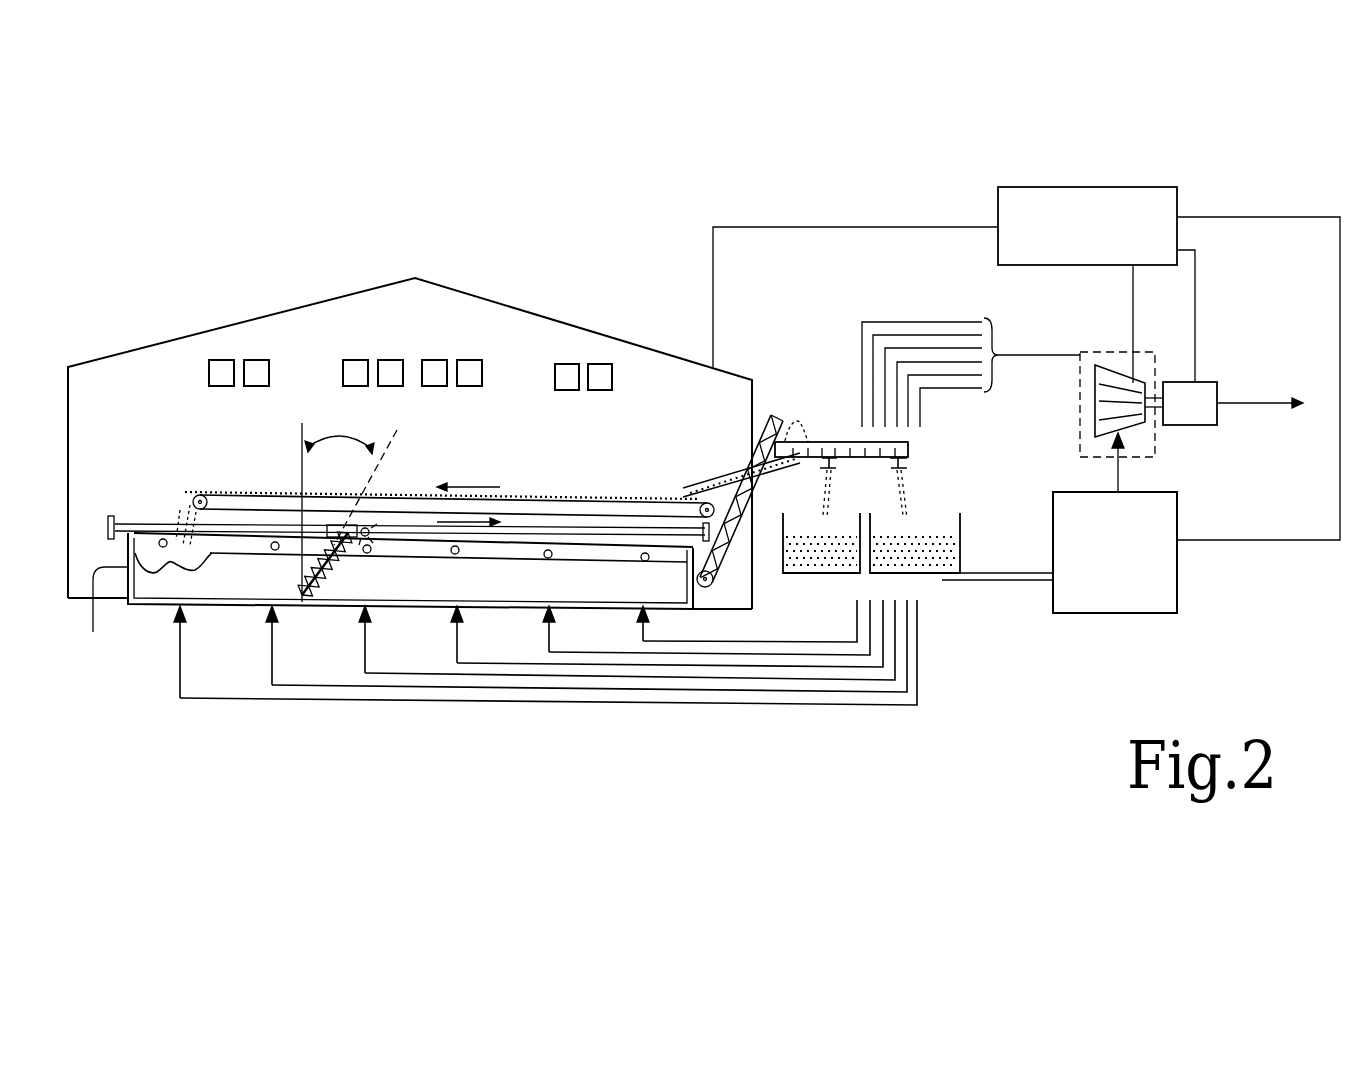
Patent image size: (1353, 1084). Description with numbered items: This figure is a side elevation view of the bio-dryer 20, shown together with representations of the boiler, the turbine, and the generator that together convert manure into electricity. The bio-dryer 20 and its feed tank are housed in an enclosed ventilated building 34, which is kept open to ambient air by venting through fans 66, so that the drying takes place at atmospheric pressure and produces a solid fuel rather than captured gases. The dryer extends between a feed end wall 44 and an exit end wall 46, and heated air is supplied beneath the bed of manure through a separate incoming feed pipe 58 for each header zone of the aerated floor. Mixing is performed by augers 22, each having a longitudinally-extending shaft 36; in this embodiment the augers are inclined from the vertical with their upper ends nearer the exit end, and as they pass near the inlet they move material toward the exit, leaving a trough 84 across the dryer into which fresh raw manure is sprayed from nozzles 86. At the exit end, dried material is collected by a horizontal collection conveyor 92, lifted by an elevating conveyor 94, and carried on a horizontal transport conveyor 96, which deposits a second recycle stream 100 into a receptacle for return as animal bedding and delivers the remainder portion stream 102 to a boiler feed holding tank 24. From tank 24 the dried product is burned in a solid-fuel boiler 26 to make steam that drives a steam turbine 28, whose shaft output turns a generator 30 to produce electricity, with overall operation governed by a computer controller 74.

The bio-dryer 20 is at (229, 483).
The augers 22 is at (336, 600).
The boiler feed holding tank 24 is at (917, 578).
The solid-fuel boiler 26 is at (1177, 575).
The steam turbine 28 is at (1135, 425).
The generator 30 is at (1205, 382).
The enclosed ventilated building 34 is at (298, 303).
The longitudinally-extending shaft 36 is at (320, 595).
The feed end wall 44 is at (690, 594).
The exit end wall 46 is at (98, 617).
The incoming feed pipe 58 is at (665, 642).
The fans 66 is at (600, 364).
The computer controller 74 is at (998, 200).
The trough 84 is at (157, 572).
The nozzles 86 is at (370, 537).
The horizontal collection conveyor 92 is at (712, 590).
The elevating conveyor 94 is at (740, 565).
The horizontal transport conveyor 96 is at (813, 460).
The second recycle stream 100 is at (830, 512).
The remainder portion stream 102 is at (905, 492).